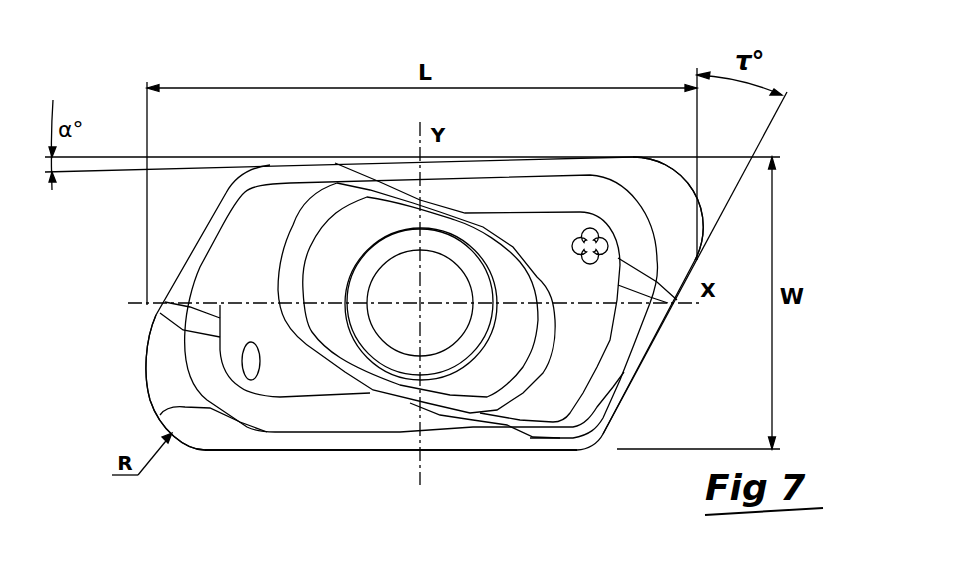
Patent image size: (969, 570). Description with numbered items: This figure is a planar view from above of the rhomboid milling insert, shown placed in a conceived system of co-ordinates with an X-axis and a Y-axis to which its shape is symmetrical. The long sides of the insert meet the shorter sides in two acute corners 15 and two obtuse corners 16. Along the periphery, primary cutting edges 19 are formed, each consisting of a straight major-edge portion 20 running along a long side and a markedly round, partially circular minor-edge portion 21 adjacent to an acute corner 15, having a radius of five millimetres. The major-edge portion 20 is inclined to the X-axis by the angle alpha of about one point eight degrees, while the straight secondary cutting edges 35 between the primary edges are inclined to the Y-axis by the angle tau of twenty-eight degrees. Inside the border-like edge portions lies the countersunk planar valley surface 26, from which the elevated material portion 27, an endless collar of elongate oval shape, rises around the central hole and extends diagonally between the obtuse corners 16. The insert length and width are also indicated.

The acute corner 15 is at (688, 184).
The obtuse corner 16 is at (221, 180).
The primary cutting edge 19 is at (255, 452).
The major-edge portion 20 is at (470, 157).
The minor-edge portion 21 is at (210, 410).
The valley surface 26 is at (584, 265).
The elevated material portion 27 is at (522, 240).
The secondary cutting edge 35 is at (647, 357).